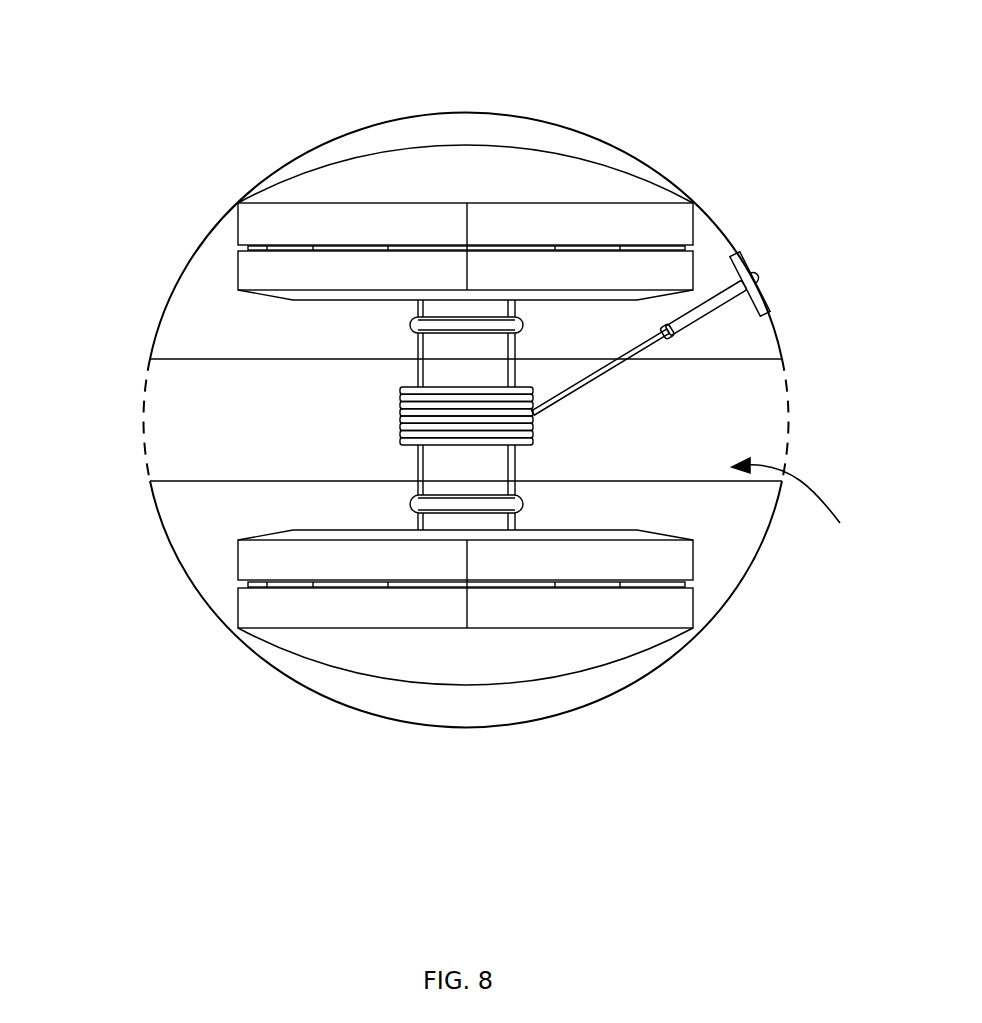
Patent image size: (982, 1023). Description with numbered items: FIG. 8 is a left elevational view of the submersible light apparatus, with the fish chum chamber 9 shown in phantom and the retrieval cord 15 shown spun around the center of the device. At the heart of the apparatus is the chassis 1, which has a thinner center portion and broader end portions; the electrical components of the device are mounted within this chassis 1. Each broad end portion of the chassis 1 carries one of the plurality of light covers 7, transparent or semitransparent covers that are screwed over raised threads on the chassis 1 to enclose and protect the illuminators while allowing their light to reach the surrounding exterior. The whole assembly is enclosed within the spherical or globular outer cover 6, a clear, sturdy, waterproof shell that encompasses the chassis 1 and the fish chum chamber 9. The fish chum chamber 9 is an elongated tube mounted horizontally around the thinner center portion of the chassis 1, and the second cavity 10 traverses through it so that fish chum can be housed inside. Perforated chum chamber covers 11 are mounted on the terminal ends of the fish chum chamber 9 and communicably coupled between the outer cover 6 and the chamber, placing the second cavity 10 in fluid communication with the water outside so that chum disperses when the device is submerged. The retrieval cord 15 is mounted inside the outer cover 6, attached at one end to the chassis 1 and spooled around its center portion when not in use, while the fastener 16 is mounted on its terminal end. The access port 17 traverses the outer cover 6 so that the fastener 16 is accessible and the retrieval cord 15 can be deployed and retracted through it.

The chassis 1 is at (245, 277).
The outer cover 6 is at (598, 138).
The light covers 7 is at (390, 165).
The fish chum chamber 9 is at (230, 481).
The second cavity 10 is at (795, 507).
The chum chamber covers 11 is at (148, 420).
The retrieval cord 15 is at (427, 403).
The fastener 16 is at (710, 303).
The access port 17 is at (766, 305).